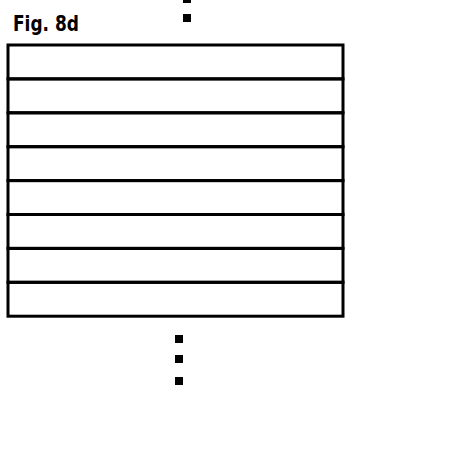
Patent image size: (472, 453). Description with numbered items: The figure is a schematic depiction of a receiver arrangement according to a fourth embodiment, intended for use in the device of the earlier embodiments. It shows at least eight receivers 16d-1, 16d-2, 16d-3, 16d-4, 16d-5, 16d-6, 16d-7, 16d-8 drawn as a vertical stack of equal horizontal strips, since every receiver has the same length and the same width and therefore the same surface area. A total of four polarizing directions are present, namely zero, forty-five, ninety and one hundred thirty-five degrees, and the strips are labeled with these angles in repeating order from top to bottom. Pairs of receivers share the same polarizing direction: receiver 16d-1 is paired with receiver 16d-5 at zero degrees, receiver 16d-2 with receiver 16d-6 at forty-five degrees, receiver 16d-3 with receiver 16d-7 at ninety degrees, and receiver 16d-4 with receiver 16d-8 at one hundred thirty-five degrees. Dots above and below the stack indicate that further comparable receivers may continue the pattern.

The receiver 16d-1 is at (330, 63).
The receiver 16d-2 is at (330, 97).
The receiver 16d-3 is at (330, 131).
The receiver 16d-4 is at (330, 165).
The receiver 16d-5 is at (330, 201).
The receiver 16d-6 is at (331, 233).
The receiver 16d-7 is at (330, 267).
The receiver 16d-8 is at (331, 297).